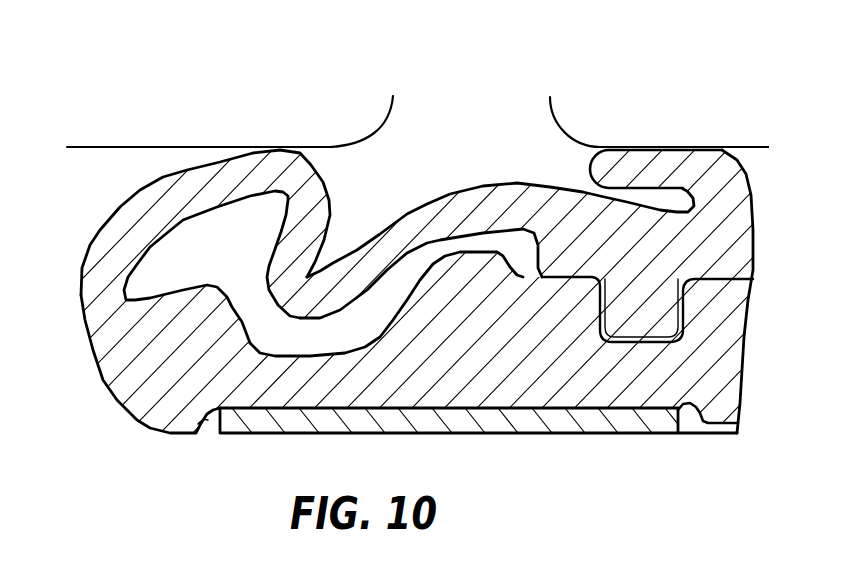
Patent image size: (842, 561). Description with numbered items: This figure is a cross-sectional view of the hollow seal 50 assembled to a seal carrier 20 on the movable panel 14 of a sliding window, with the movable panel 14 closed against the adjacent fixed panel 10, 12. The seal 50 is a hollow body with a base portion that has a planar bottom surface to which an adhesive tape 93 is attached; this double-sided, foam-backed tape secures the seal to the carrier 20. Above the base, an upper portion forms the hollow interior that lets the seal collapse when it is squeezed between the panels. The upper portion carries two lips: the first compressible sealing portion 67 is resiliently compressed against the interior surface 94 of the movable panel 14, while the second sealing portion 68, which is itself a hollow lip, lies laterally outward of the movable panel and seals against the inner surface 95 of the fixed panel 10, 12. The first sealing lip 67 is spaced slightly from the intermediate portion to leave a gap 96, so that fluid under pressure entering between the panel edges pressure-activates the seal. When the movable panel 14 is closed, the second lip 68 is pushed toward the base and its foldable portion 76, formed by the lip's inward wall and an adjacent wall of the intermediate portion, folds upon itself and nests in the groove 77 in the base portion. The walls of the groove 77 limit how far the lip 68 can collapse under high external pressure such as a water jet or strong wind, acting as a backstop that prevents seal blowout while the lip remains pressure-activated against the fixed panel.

The first fixed panel 10 is at (397, 102).
The second fixed panel 12 is at (405, 87).
The movable panel 14 is at (550, 100).
The seal carrier 20 is at (167, 450).
The hollow seal 50 is at (421, 322).
The first compressible sealing portion 67 is at (587, 169).
The second sealing portion 68 is at (317, 172).
The foldable portion 76 is at (268, 277).
The groove 77 is at (323, 350).
The adhesive tape 93 is at (562, 424).
The interior surface 94 is at (757, 148).
The inner surface 95 is at (100, 148).
The gap 96 is at (676, 202).